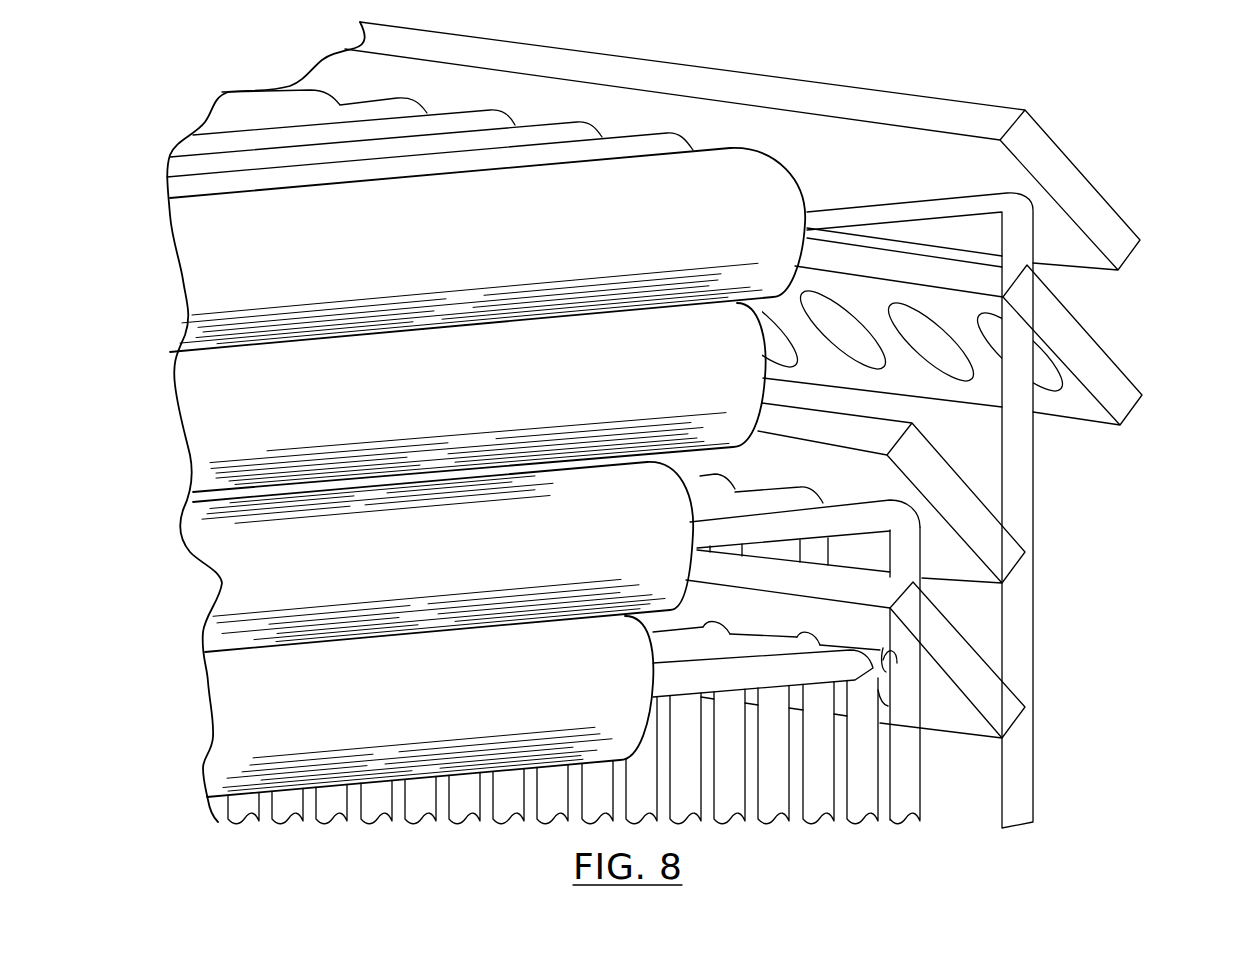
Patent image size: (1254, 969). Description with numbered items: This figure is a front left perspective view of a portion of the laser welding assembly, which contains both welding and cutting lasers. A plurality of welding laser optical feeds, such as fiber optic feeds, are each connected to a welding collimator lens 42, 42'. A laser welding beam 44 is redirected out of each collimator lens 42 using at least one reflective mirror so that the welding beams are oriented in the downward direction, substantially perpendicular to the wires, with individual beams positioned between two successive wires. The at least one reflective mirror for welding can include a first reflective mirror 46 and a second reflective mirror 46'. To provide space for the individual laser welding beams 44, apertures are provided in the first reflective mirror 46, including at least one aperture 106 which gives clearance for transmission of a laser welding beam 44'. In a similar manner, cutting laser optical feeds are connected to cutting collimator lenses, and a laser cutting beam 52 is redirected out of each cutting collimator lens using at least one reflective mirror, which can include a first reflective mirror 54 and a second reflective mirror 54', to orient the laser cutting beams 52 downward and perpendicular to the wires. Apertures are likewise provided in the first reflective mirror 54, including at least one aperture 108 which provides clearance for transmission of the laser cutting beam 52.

The welding collimator lens 42 is at (430, 747).
The welding collimator lens 42' is at (404, 557).
The laser welding beam 44 is at (562, 707).
The laser welding beam 44' is at (914, 702).
The first reflective mirror 46 is at (895, 659).
The second reflective mirror 46' is at (916, 494).
The laser cutting beam 52 is at (1020, 468).
The first reflective mirror 54 is at (994, 345).
The second reflective mirror 54' is at (765, 146).
The aperture 106 is at (1007, 660).
The aperture 108 is at (1042, 370).